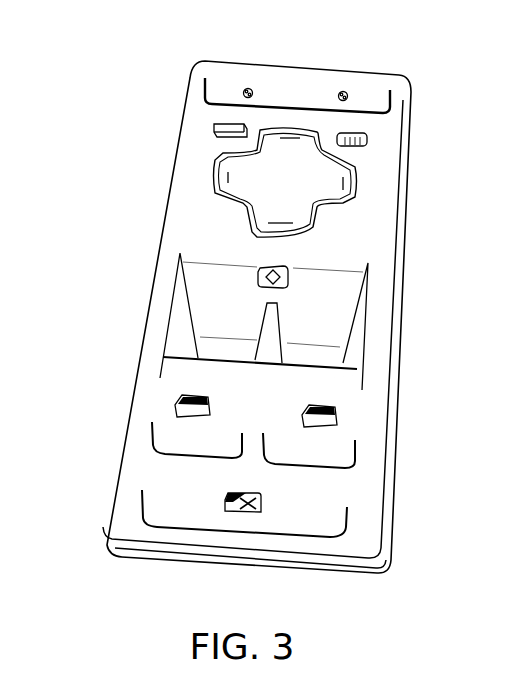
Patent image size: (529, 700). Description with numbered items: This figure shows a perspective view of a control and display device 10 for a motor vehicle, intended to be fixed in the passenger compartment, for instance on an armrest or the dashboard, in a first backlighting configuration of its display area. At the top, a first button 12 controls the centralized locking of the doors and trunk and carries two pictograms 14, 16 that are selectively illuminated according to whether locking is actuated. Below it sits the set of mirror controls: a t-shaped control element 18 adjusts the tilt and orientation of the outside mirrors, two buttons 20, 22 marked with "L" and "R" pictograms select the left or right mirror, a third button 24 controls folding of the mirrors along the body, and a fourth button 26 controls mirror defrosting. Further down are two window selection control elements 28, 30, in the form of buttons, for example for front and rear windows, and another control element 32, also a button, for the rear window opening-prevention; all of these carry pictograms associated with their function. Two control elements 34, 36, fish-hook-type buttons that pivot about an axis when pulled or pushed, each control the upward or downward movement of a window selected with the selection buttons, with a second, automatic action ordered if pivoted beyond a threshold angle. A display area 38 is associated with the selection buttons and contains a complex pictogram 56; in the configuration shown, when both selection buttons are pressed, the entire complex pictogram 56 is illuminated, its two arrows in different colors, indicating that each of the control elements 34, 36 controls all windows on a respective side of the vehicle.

The control and display device 10 is at (78, 190).
The first button 12 is at (297, 84).
The pictogram 14 is at (247, 86).
The pictogram 16 is at (347, 89).
The t-shaped control element 18 is at (315, 183).
The button 20 is at (205, 217).
The button 22 is at (352, 233).
The third button 24 is at (213, 125).
The fourth button 26 is at (368, 138).
The window selection control element 28 is at (170, 432).
The window selection control element 30 is at (333, 443).
The control element 32 is at (310, 517).
The control element 34 is at (187, 370).
The control element 36 is at (330, 378).
The display area 38 is at (210, 285).
The complex pictogram 56 is at (288, 278).